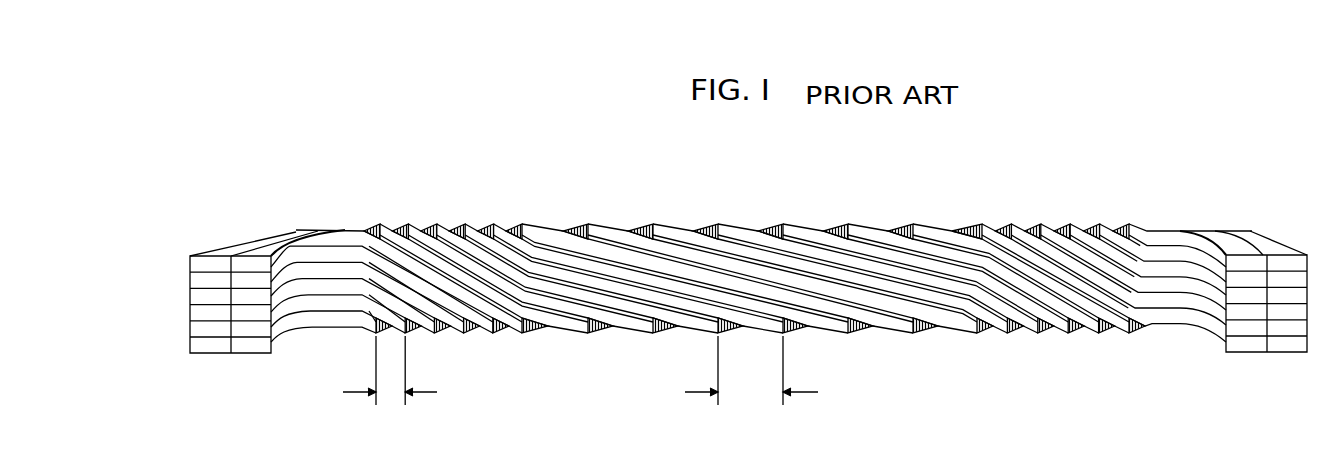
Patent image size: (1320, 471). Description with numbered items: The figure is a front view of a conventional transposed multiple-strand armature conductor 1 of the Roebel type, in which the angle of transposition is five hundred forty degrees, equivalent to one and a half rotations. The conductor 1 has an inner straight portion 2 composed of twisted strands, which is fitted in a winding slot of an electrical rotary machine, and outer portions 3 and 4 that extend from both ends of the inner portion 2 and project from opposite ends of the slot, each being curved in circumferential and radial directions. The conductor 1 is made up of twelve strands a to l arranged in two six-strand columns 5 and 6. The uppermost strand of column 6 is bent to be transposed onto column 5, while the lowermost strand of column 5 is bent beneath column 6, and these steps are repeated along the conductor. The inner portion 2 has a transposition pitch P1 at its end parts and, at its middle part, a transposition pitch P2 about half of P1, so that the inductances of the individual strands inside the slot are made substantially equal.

The armature conductor 1 is at (636, 344).
The inner straight portion 2 is at (1141, 184).
The outer portion 3 is at (186, 250).
The outer portion 4 is at (1308, 241).
The six-strand column 5 is at (252, 355).
The six-strand column 6 is at (213, 355).
The transposition pitch P1 is at (390, 370).
The transposition pitch P2 is at (751, 370).